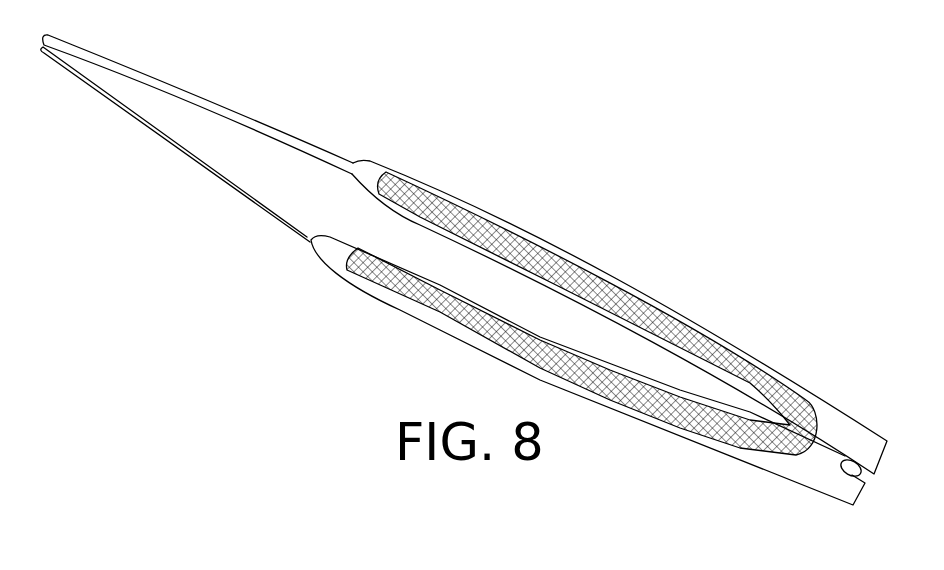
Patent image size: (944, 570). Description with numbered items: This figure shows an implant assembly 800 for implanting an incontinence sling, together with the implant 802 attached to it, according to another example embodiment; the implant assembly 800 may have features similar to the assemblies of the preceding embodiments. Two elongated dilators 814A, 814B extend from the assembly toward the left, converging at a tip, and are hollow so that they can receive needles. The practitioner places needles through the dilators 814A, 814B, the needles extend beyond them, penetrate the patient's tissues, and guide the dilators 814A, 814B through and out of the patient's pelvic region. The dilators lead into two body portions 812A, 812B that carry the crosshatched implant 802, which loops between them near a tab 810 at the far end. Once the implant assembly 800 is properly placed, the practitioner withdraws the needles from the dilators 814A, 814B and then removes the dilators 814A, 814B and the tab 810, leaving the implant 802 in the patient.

The implant assembly 800 is at (573, 212).
The implant 802 is at (530, 265).
The tab 810 is at (853, 476).
The upper head (body portion) 812A is at (857, 434).
The lower head (body portion) 812B is at (807, 473).
The dilator 814A is at (197, 100).
The dilator 814B is at (178, 147).